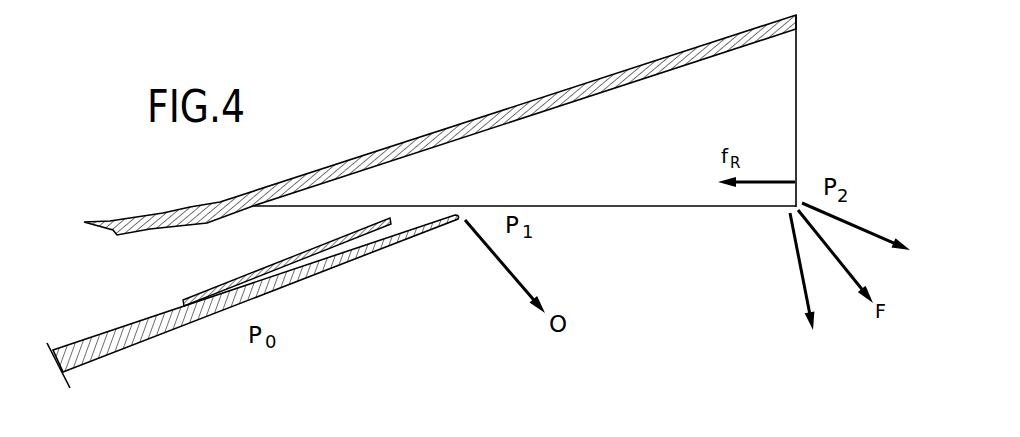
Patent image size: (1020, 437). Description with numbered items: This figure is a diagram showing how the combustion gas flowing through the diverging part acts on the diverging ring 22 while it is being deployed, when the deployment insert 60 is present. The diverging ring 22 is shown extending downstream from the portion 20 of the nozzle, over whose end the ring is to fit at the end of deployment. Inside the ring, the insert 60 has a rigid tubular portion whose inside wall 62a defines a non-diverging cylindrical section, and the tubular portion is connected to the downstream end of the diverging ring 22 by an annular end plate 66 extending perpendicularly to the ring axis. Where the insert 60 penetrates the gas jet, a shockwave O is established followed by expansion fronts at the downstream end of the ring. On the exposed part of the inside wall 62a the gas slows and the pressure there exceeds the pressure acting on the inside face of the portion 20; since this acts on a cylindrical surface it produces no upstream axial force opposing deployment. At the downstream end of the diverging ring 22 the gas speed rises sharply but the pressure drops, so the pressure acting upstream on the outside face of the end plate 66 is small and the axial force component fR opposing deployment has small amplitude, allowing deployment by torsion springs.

The portion of the nozzle 20 is at (122, 325).
The diverging ring 22 is at (432, 132).
The insert 60 is at (560, 151).
The inside wall 62a is at (617, 207).
The annular end plate 66 is at (796, 78).